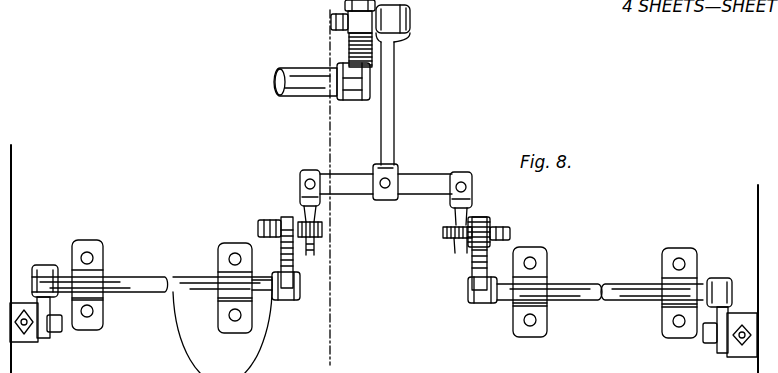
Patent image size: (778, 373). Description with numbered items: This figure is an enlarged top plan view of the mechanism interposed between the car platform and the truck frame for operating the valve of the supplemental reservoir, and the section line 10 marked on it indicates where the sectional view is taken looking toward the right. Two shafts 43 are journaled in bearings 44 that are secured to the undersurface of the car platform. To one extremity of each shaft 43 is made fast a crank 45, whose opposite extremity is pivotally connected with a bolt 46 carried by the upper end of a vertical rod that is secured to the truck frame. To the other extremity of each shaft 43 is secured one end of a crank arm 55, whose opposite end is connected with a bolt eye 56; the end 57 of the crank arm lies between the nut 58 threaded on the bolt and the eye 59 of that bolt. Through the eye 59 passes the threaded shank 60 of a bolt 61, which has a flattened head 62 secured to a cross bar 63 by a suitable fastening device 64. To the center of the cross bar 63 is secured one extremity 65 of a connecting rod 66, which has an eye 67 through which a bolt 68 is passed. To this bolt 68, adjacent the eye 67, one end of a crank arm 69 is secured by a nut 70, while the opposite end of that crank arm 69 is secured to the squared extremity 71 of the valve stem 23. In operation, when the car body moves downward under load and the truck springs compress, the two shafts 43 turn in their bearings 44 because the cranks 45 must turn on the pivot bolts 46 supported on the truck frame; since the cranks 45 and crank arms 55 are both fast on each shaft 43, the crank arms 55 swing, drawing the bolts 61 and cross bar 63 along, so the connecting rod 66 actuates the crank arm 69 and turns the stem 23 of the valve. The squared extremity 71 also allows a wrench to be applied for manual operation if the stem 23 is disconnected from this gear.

The center line of vehicle 10 is at (245, 42).
The valve stem 23 is at (300, 97).
The shaft 43 is at (133, 280).
The bearing 44 is at (91, 324).
The crank 45 is at (38, 300).
The bolt 46 is at (717, 352).
The crank arm 55 is at (298, 268).
The bolt eye 56 is at (472, 220).
The end of crank 57 is at (482, 222).
The nut 58 is at (502, 226).
The eye 59 is at (446, 232).
The threaded shank 60 is at (312, 256).
The bolt 61 is at (306, 208).
The flattened head 62 is at (322, 180).
The cross bar 63 is at (411, 178).
The fastening device 64 is at (310, 175).
The extremity of connecting rod 65 is at (392, 198).
The connecting rod 66 is at (396, 78).
The eye 67 is at (398, 36).
The bolt 68 is at (410, 20).
The crank arm 69 is at (348, 52).
The nut 70 is at (345, 16).
The squared extremity 71 is at (372, 100).